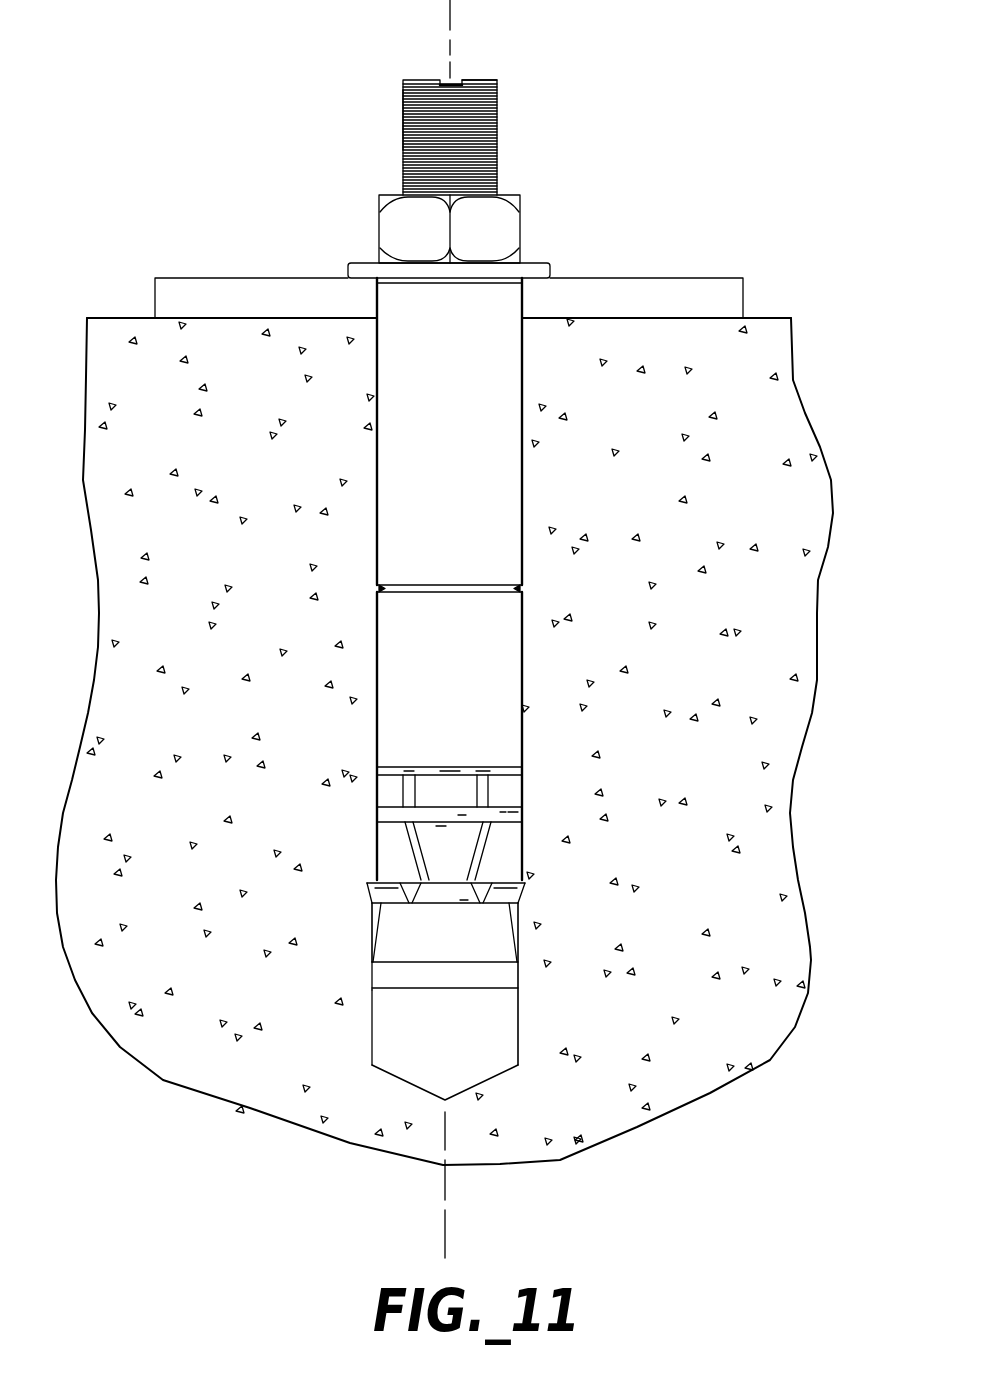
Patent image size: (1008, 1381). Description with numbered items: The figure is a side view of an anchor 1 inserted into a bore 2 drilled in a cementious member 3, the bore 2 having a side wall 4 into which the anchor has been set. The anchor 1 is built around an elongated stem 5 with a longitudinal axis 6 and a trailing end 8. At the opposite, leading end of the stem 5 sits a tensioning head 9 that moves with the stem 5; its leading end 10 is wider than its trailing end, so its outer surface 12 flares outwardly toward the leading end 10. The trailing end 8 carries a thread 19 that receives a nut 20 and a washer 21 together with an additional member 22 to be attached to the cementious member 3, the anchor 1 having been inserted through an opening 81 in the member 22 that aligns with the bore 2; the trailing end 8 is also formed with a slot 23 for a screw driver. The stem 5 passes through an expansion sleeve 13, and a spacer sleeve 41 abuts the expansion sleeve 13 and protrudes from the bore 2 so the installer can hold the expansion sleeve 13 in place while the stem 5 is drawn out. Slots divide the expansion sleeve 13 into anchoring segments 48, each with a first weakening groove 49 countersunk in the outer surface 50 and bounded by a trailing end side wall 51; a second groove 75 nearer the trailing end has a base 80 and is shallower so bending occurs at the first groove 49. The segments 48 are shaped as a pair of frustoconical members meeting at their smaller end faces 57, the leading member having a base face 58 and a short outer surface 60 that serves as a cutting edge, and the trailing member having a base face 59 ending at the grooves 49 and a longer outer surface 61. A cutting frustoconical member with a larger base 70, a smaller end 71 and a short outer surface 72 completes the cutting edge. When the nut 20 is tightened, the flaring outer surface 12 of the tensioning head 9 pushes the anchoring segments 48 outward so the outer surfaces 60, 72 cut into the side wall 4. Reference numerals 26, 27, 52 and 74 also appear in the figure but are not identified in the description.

The anchor 1 is at (605, 148).
The bore 2 is at (508, 1082).
The cementious member 3 is at (795, 380).
The side wall 4 is at (519, 1017).
The elongated stem 5 is at (400, 156).
The longitudinal axis 6 is at (452, 42).
The trailing end 8 is at (475, 78).
The tensioning head 9 is at (520, 950).
The leading end 10 is at (520, 990).
The outer surface 12 is at (370, 962).
The expansion sleeve 13 is at (527, 668).
The thread 19 is at (497, 102).
The nut 20 is at (378, 230).
The washer 21 is at (552, 270).
The additional member 22 is at (745, 292).
The slot 23 is at (442, 80).
The inner sleeve edge 26 is at (478, 780).
The lower body wall 27 is at (370, 975).
The spacer sleeve 41 is at (527, 388).
The anchoring segments 48 is at (462, 785).
The first weakening groove 49 is at (445, 782).
The outer surface 50 is at (485, 615).
The trailing end side wall 51 is at (512, 812).
The segment tab 52 is at (460, 815).
The end faces of smaller diameter 57 is at (525, 882).
The base face 58 is at (530, 897).
The base face 59 is at (377, 822).
The outer surface 60 is at (445, 893).
The outer surface 61 is at (528, 900).
The larger base 70 is at (368, 888).
The smaller end 71 is at (368, 902).
The outer surface 72 is at (412, 790).
The segment tab 74 is at (440, 826).
The second grooves 75 is at (395, 775).
The base 80 is at (455, 765).
The opening 81 is at (380, 302).